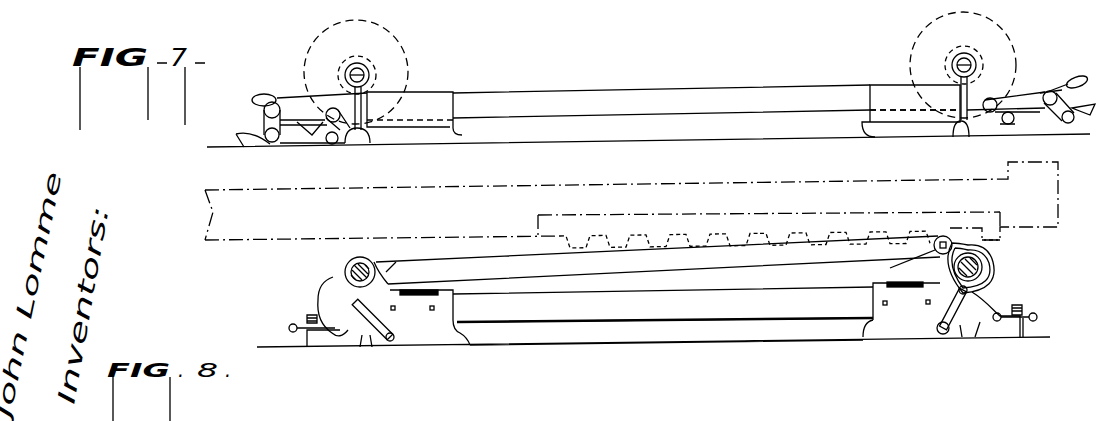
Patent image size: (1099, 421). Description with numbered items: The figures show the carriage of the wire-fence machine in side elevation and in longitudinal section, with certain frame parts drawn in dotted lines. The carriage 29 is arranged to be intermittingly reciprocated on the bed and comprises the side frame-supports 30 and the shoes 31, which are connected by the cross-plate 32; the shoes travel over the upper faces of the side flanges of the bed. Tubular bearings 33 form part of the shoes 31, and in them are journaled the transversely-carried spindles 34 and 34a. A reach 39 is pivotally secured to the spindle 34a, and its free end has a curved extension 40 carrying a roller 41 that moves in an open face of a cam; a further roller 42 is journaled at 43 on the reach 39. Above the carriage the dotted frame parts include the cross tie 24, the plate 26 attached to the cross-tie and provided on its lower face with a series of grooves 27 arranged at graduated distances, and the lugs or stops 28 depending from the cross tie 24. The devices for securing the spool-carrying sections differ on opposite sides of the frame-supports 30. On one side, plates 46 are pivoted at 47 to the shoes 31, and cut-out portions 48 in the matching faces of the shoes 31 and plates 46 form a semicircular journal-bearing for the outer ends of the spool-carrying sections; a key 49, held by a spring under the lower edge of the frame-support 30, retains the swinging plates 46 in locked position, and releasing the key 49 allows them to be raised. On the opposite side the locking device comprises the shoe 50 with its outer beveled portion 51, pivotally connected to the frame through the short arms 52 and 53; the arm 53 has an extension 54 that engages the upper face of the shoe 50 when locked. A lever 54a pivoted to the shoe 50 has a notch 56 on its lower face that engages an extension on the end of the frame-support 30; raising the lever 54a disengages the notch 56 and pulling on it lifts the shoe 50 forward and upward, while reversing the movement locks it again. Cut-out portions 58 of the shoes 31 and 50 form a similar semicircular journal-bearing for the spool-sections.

In FIG. 8, the cross tie 24 is at (631, 201).
In FIG. 8, the frame or plate 26 is at (628, 226).
In FIG. 8, the rack teeth 27 is at (746, 235).
In FIG. 8, the lugs or stops 28 is at (986, 232).
In FIG. 7, the carriage 29 is at (648, 102).
In FIG. 8, the carriage 29 is at (653, 336).
In FIG. 7, the side frame-supports 30 is at (749, 107).
In FIG. 8, the side frame-supports 30 is at (663, 304).
In FIG. 7, the shoes 31 is at (663, 111).
In FIG. 8, the shoes 31 is at (665, 315).
In FIG. 8, the cross-plate 32 is at (425, 298).
In FIG. 7, the tubular bearing 33 is at (383, 52).
In FIG. 7, the shaft or spindle 34 is at (951, 67).
In FIG. 7, the shaft or spindle 34a is at (348, 72).
In FIG. 8, the shaft or spindle 34a is at (345, 270).
In FIG. 8, the reach 39 is at (658, 260).
In FIG. 8, the curved extension 40 is at (986, 268).
In FIG. 8, the roller 41 is at (1002, 284).
In FIG. 8, the roller 42 is at (942, 236).
In FIG. 8, the journal 43 is at (890, 268).
In FIG. 8, the plates 46 is at (338, 343).
In FIG. 8, the pivot 47 is at (384, 288).
In FIG. 8, the cut-out portions 48 is at (365, 348).
In FIG. 8, the key 49 is at (289, 328).
In FIG. 7, the shoe 50 is at (305, 146).
In FIG. 7, the beveled portion 51 is at (235, 142).
In FIG. 7, the short arm 52 is at (262, 116).
In FIG. 7, the short arm 53 is at (326, 116).
In FIG. 7, the extension 54 is at (1013, 100).
In FIG. 7, the lever 54a is at (262, 93).
In FIG. 7, the notch 56 is at (1053, 92).
In FIG. 7, the cut-out portions 58 is at (356, 144).